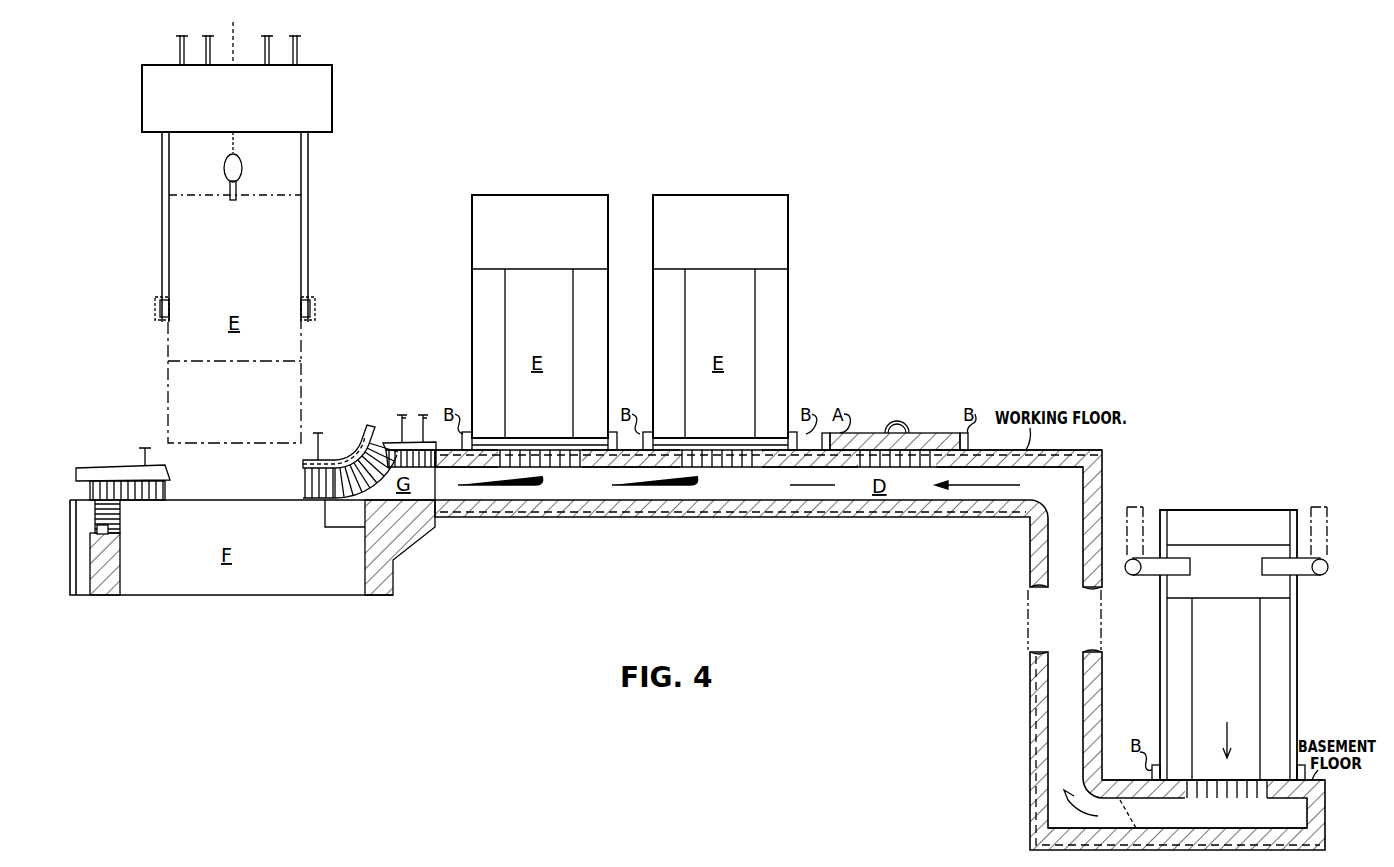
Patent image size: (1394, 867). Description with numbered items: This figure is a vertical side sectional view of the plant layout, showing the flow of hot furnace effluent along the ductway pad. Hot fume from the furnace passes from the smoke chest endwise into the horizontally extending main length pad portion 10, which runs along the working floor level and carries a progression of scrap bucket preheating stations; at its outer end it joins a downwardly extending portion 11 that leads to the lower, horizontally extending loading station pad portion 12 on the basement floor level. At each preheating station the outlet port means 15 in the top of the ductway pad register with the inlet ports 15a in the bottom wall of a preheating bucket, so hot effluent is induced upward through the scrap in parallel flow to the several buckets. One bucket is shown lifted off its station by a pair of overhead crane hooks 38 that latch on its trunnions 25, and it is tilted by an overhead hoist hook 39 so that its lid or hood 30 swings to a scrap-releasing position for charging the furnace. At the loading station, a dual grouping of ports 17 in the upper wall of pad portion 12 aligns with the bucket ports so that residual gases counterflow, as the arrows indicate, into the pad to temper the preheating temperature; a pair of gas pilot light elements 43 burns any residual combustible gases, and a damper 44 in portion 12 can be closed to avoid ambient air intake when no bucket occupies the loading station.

The main length pad portion 10 is at (645, 517).
The downwardly extending portion 11 is at (1030, 549).
The loading station pad portion 12 is at (1130, 781).
The outlet port means 15 is at (548, 468).
The inlet ports 15a is at (558, 450).
The dual grouping of ports 17 is at (1207, 800).
The trunnions 25 is at (159, 318).
The lid or hood 30 is at (1227, 510).
The overhead conveyor or crane hooks 38 is at (162, 268).
The overhead hoist hook 39 is at (237, 188).
The gas pilot light elements 43 is at (1136, 576).
The damper 44 is at (1108, 815).